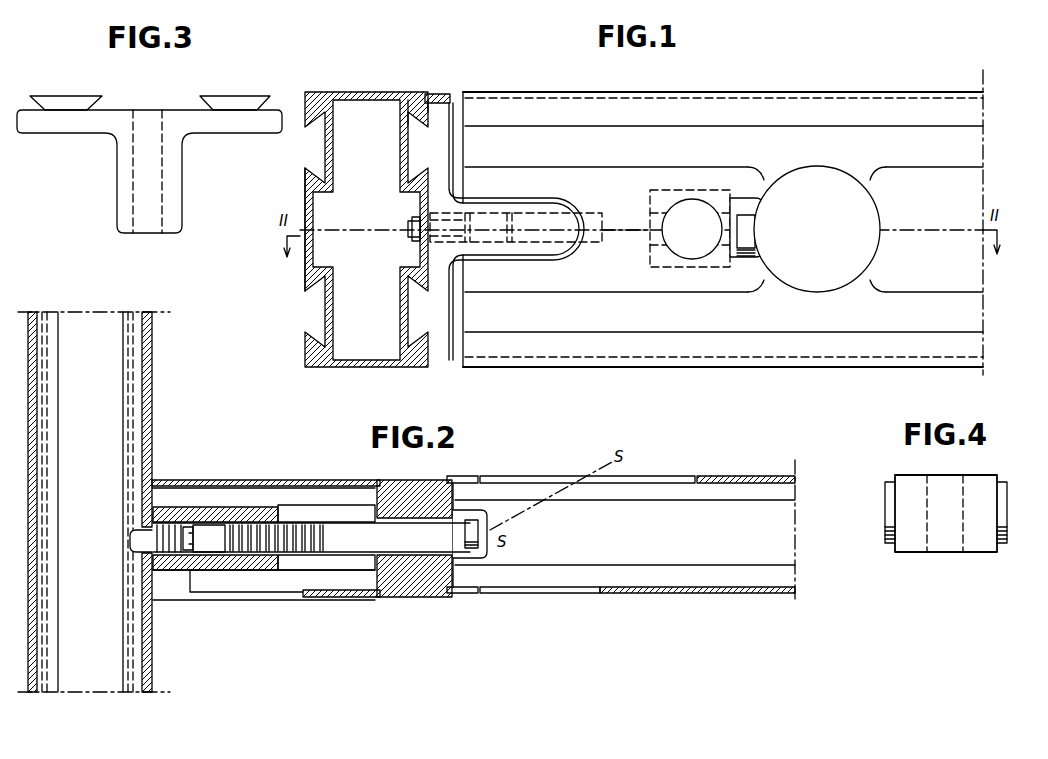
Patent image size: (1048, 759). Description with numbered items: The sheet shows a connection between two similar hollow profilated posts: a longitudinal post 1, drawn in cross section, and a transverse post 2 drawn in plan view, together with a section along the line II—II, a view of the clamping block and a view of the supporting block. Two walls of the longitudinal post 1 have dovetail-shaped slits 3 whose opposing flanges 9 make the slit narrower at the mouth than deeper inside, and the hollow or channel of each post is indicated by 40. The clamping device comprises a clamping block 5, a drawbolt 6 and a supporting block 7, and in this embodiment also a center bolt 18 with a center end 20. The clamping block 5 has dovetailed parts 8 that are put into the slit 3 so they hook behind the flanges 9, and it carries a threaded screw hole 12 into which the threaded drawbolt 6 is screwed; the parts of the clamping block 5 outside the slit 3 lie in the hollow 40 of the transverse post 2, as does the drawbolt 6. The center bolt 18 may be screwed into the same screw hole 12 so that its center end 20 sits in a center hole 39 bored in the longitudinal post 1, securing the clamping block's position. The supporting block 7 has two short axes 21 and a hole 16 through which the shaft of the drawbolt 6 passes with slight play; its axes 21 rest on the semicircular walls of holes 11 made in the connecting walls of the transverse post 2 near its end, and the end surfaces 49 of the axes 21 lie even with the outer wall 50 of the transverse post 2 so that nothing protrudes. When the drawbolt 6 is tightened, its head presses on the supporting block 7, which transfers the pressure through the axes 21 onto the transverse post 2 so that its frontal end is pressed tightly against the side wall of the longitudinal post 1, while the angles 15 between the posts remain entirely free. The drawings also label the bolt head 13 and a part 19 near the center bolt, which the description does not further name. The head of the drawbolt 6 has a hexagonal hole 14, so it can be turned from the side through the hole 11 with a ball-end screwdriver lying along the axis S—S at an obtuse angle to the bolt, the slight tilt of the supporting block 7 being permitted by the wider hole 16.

In FIG. 1, the longitudinal post 1 is at (365, 215).
In FIG. 2, the longitudinal post 1 is at (155, 371).
In FIG. 1, the transverse post 2 is at (560, 110).
In FIG. 2, the transverse post 2 is at (330, 600).
In FIG. 1, the slits 3 is at (318, 146).
In FIG. 3, the clamping block 5 is at (118, 168).
In FIG. 1, the clamping block 5 is at (440, 167).
In FIG. 2, the clamping block 5 is at (305, 571).
In FIG. 1, the drawbolt 6 is at (620, 222).
In FIG. 2, the drawbolt 6 is at (297, 553).
In FIG. 1, the supporting block 7 is at (668, 190).
In FIG. 2, the supporting block 7 is at (458, 594).
In FIG. 4, the supporting block 7 is at (913, 530).
In FIG. 3, the dovetailed parts 8 is at (93, 97).
In FIG. 1, the dovetailed parts 8 is at (414, 120).
In FIG. 1, the flanges 9 is at (430, 94).
In FIG. 1, the holes 11 is at (815, 195).
In FIG. 2, the holes 11 is at (520, 477).
In FIG. 3, the screw hole 12 is at (147, 191).
In FIG. 1, the screw hole 12 is at (500, 212).
In FIG. 2, the screw hole 12 is at (303, 537).
In FIG. 1, the nut 13 is at (744, 212).
In FIG. 2, the nut 13 is at (481, 560).
In FIG. 1, the hexagonal hole 14 is at (750, 215).
In FIG. 2, the hexagonal hole 14 is at (485, 540).
In FIG. 2, the angles 15 is at (157, 480).
In FIG. 4, the hole 16 is at (950, 528).
In FIG. 1, the center bolt 18 is at (468, 212).
In FIG. 2, the center bolt 18 is at (205, 571).
In FIG. 2, the washer 19 is at (240, 558).
In FIG. 1, the center end 20 is at (411, 221).
In FIG. 2, the center end 20 is at (212, 553).
In FIG. 1, the short axes 21 is at (703, 212).
In FIG. 2, the short axes 21 is at (448, 594).
In FIG. 4, the short axes 21 is at (890, 545).
In FIG. 2, the center hole 39 is at (156, 572).
In FIG. 1, the hollow 40 is at (358, 167).
In FIG. 2, the end surfaces 49 is at (420, 598).
In FIG. 4, the end surfaces 49 is at (885, 500).
In FIG. 2, the outer wall 50 is at (362, 598).